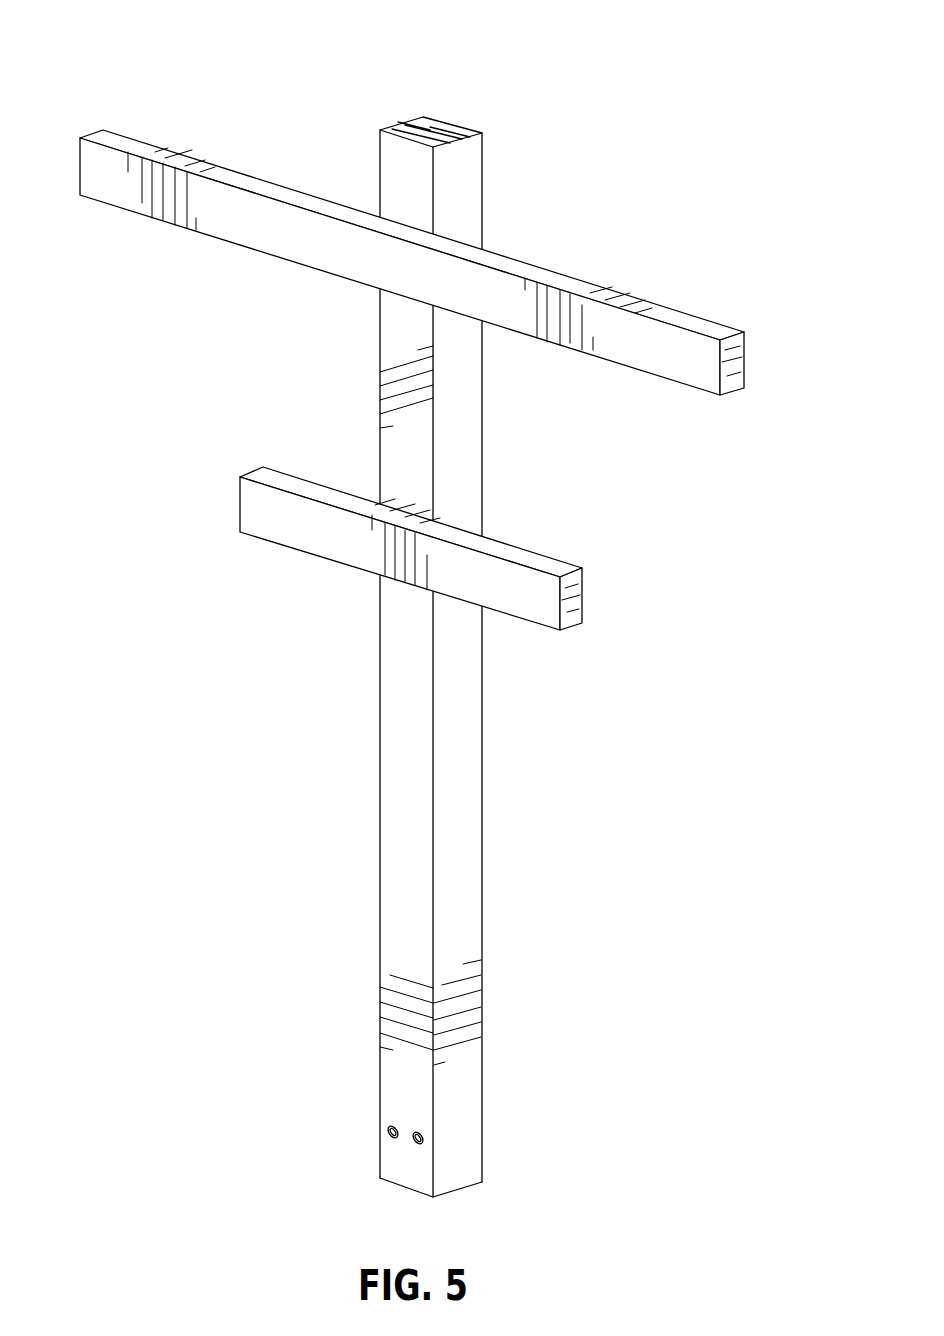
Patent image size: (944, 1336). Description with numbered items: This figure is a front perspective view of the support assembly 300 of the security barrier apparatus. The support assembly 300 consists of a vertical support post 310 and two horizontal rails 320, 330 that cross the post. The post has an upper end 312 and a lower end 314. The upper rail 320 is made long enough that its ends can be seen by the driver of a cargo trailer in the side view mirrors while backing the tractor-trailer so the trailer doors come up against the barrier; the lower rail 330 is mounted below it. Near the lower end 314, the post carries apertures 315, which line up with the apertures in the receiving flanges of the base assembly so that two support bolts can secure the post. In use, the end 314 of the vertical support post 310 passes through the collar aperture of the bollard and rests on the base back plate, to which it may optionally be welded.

The support assembly 300 is at (729, 149).
The vertical support post 310 is at (423, 634).
The end 312 is at (432, 118).
The end 314 is at (472, 1185).
The apertures 315 is at (414, 1144).
The upper rail 320 is at (710, 386).
The rail 330 is at (556, 628).